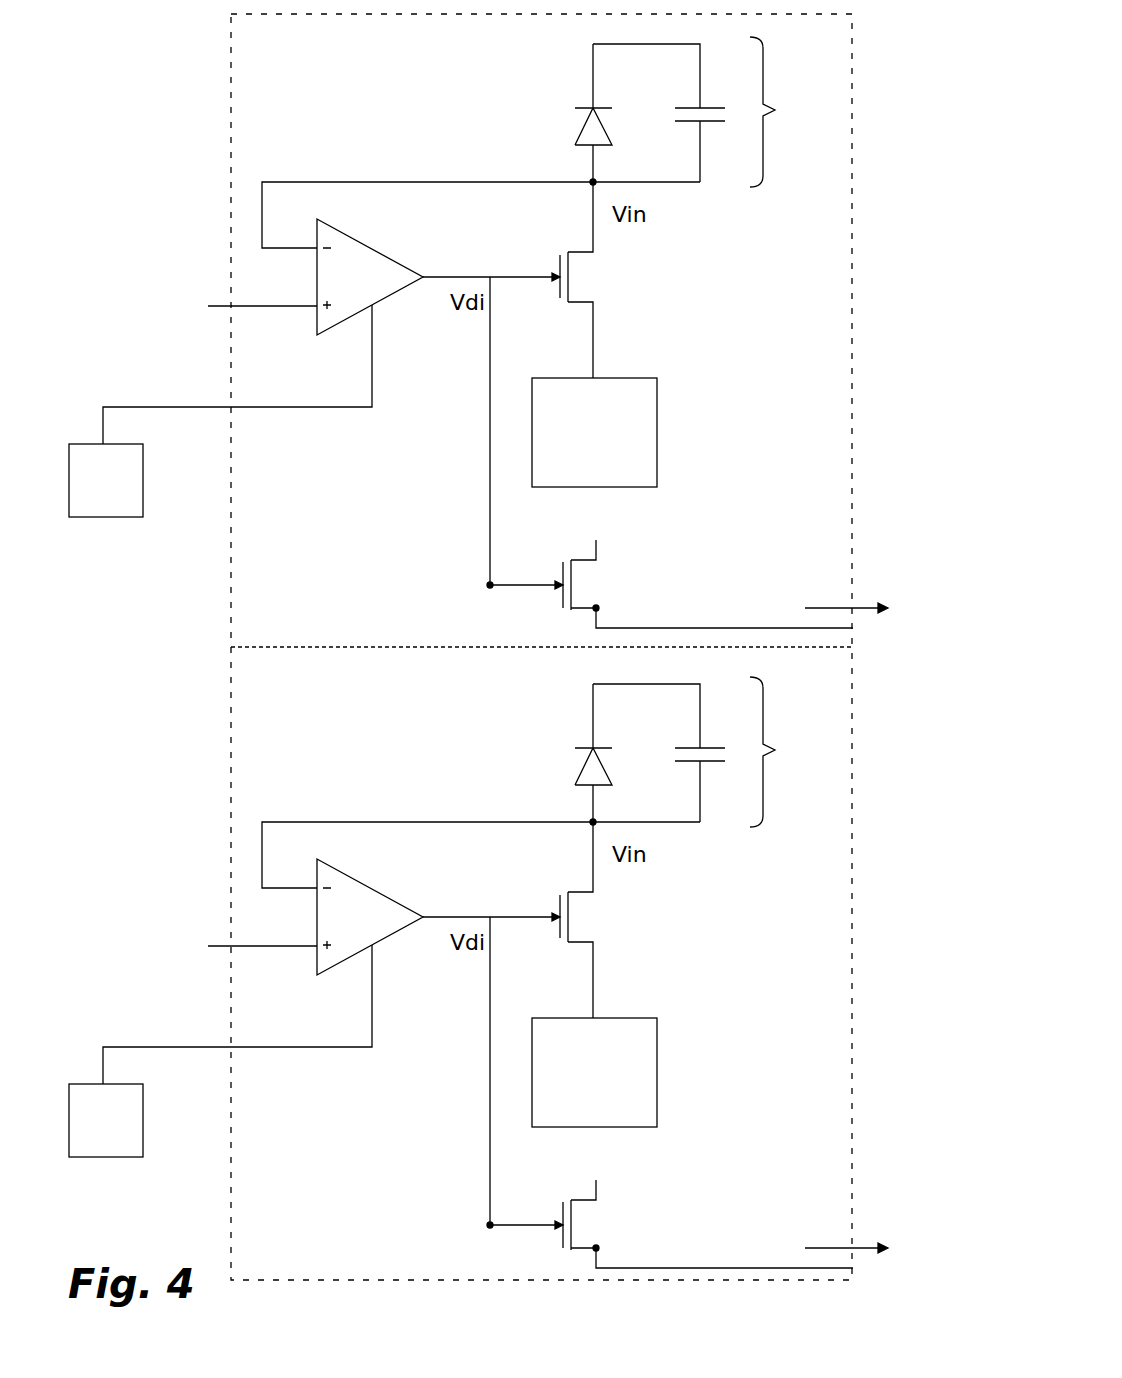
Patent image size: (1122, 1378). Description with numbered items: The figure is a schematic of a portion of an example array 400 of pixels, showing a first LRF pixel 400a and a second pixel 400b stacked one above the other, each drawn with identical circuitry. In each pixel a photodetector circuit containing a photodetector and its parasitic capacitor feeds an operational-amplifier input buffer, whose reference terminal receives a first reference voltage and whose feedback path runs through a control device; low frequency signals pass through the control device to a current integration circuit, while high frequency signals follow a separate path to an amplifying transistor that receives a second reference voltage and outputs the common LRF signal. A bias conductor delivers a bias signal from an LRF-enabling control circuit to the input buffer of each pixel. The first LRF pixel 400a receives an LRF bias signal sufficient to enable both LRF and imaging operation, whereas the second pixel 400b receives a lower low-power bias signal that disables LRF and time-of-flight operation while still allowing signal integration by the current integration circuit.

The array of pixels 400 is at (178, 47).
The first LRF pixel 400a is at (853, 72).
The second pixel 400b is at (853, 712).